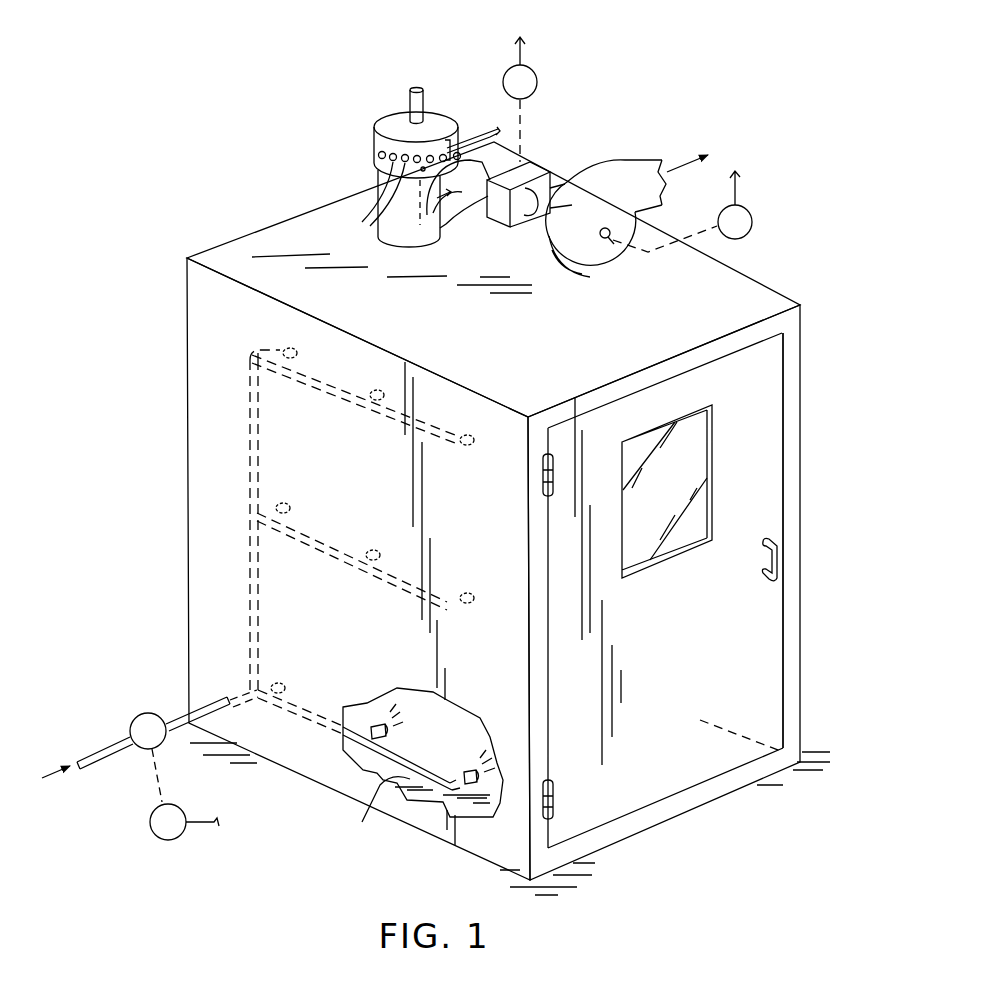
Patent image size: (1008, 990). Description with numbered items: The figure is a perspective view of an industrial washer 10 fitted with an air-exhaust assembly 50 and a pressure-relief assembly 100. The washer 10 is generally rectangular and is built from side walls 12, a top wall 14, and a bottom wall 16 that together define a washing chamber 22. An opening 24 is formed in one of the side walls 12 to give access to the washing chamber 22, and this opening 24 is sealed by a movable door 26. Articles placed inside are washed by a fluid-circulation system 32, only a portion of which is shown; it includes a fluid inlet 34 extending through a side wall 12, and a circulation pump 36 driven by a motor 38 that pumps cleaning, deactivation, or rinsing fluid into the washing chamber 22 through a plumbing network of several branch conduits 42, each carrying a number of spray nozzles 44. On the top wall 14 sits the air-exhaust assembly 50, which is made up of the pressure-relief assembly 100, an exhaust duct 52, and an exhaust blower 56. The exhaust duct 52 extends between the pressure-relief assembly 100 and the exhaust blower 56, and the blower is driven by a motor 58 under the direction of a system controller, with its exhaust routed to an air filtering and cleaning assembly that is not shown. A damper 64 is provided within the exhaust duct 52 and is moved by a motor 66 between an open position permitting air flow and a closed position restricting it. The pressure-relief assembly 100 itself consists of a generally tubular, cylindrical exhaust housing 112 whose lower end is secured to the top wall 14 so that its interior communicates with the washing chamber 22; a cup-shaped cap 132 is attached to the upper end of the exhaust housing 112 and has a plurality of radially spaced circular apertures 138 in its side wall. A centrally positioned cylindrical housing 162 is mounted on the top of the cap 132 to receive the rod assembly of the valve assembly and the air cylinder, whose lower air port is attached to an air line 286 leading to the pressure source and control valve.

The washer 10 is at (234, 165).
The side walls 12 is at (217, 326).
The top wall 14 is at (290, 233).
The bottom wall 16 is at (376, 813).
The washing chamber 22 is at (460, 727).
The opening 24 is at (783, 473).
The movable door 26 is at (762, 633).
The fluid-circulation system 32 is at (131, 692).
The fluid inlet 34 is at (95, 767).
The circulation pump 36 is at (130, 722).
The motor 38 is at (167, 843).
The branch conduits 42 is at (330, 393).
The spray nozzles 44 is at (477, 457).
The air-exhaust assembly 50 is at (354, 128).
The exhaust duct 52 is at (476, 188).
The exhaust blower 56 is at (597, 260).
The motor 58 is at (754, 229).
The damper 64 is at (538, 163).
The motor 66 is at (540, 82).
The pressure-relief assembly 100 is at (386, 108).
The exhaust housing 112 is at (392, 232).
The cap 132 is at (371, 154).
The circular apertures 138 is at (377, 212).
The cylindrical housing 162 is at (427, 101).
The air line 286 is at (470, 128).